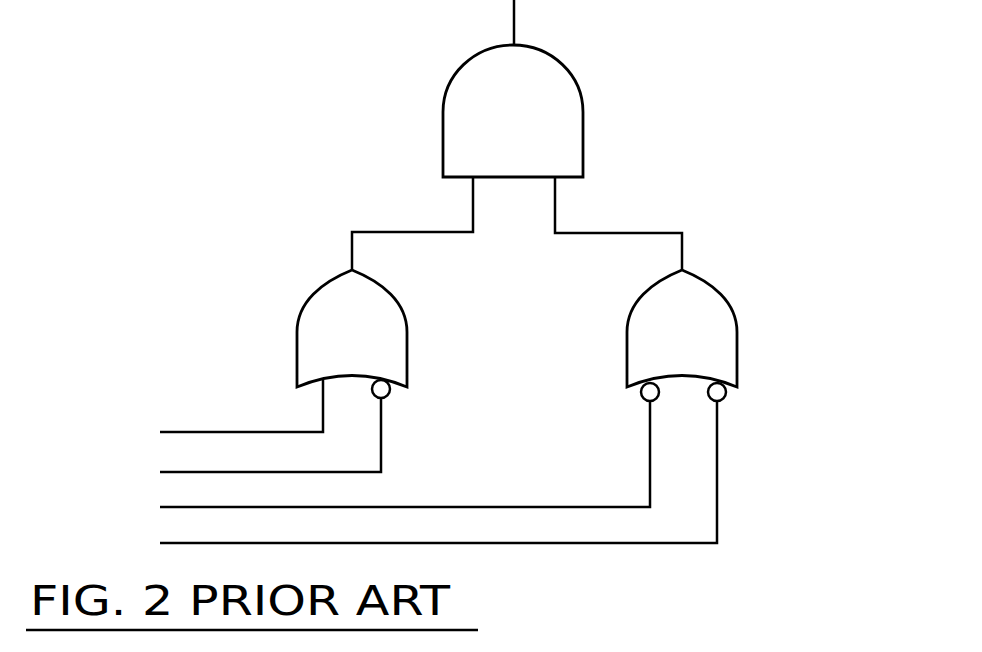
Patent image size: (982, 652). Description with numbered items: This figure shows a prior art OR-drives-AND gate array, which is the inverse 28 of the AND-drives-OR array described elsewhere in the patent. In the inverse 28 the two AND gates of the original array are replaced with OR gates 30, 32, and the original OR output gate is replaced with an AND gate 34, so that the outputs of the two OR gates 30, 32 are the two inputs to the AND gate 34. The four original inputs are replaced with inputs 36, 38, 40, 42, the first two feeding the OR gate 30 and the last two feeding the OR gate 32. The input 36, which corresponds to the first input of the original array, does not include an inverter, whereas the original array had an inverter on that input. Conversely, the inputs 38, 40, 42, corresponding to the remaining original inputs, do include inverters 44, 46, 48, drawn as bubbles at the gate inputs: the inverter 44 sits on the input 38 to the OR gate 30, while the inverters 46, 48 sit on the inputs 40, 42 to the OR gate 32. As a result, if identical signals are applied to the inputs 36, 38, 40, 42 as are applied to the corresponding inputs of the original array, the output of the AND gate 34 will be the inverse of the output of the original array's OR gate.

The inverse 28 is at (700, 203).
The OR gate 30 is at (368, 344).
The OR gate 32 is at (704, 344).
The AND gate 34 is at (529, 133).
The input 36 is at (220, 412).
The input 38 is at (249, 441).
The input 40 is at (383, 460).
The input 42 is at (417, 479).
The inverter 44 is at (389, 396).
The inverter 46 is at (644, 401).
The inverter 48 is at (726, 396).